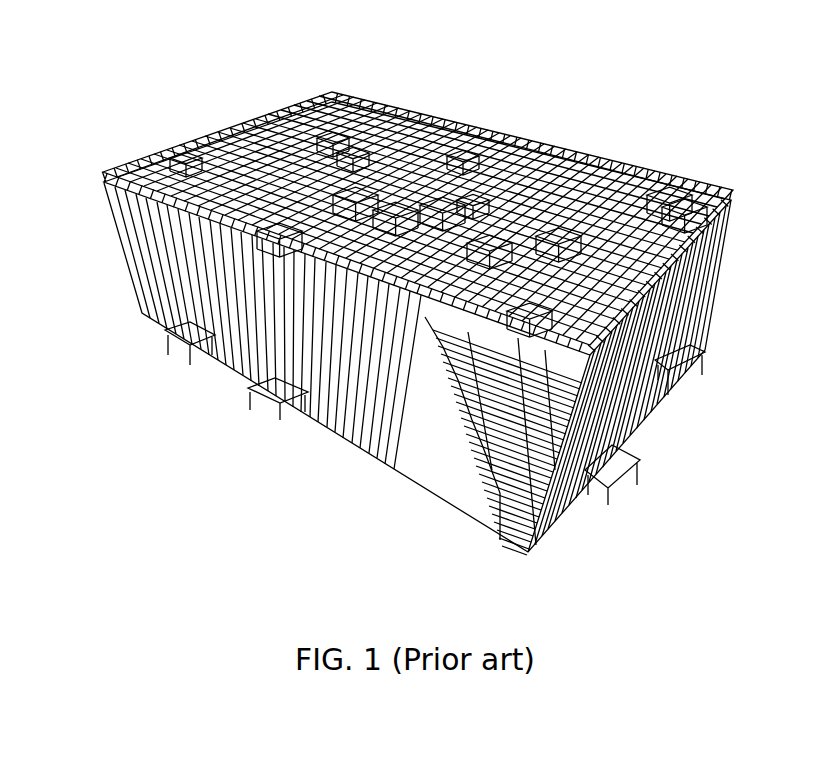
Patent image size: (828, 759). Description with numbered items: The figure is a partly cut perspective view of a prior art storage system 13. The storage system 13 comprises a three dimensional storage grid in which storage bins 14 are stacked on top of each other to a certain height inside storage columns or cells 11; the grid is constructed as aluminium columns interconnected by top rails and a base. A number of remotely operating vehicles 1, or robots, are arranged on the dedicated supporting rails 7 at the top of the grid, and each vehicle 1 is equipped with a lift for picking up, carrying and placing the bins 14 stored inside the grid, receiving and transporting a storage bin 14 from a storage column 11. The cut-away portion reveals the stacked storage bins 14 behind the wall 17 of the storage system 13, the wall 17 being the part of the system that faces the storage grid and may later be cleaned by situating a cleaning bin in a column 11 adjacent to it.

The storage system 13 is at (150, 95).
The storage column 11 is at (250, 208).
The remotely operating vehicle 1 is at (550, 230).
The wall 17 is at (162, 283).
The supporting rails 7 is at (457, 302).
The storage bin 14 is at (543, 413).